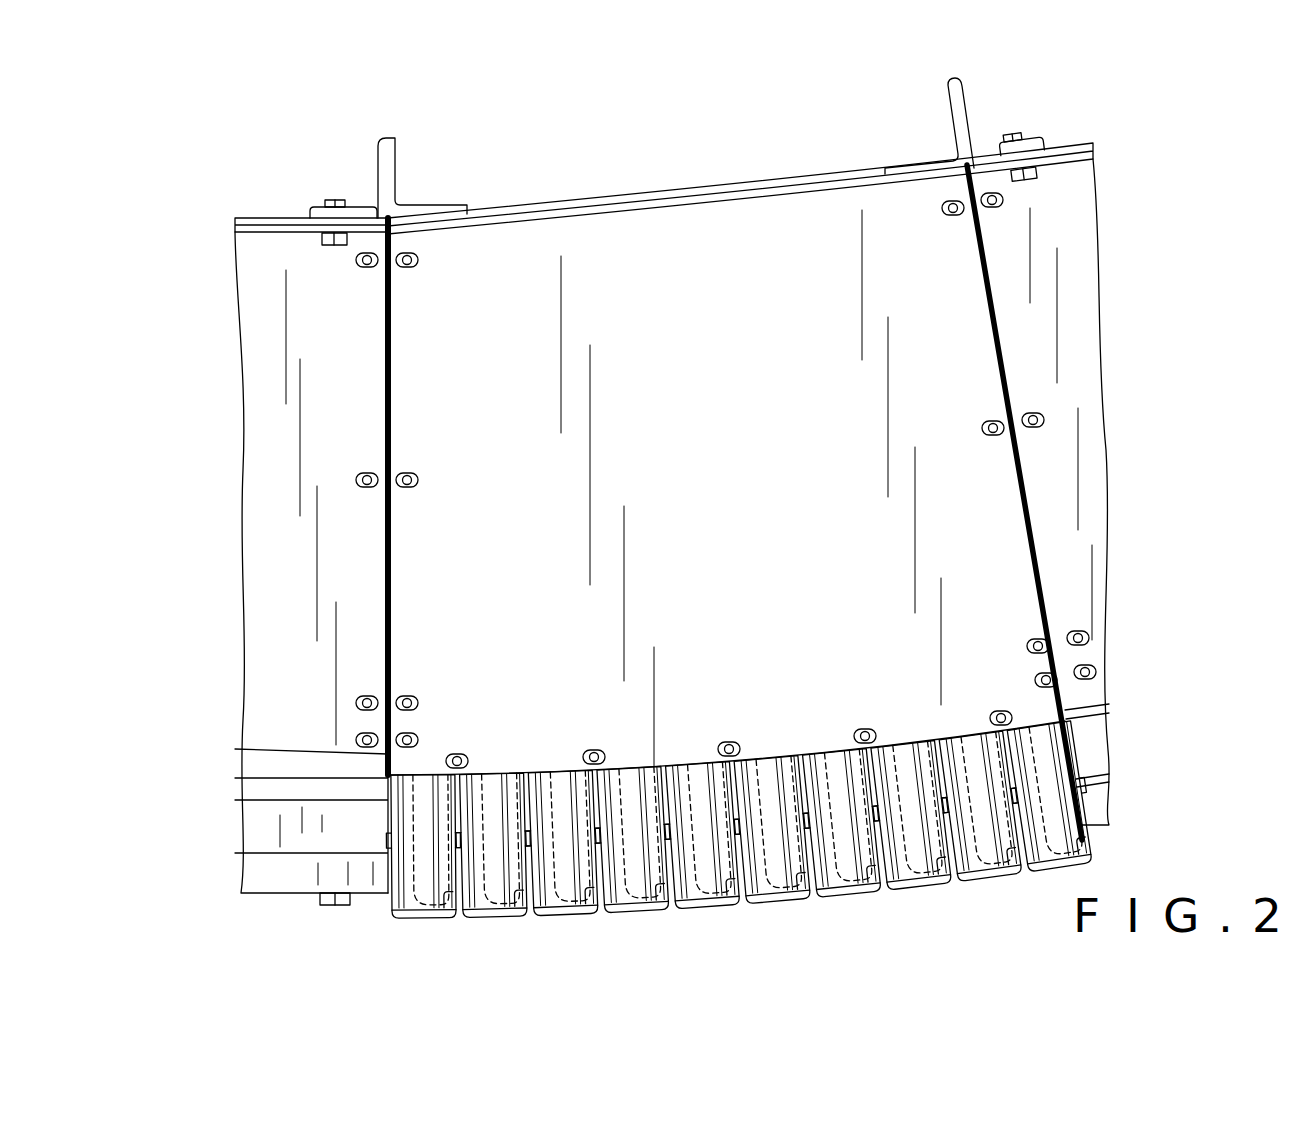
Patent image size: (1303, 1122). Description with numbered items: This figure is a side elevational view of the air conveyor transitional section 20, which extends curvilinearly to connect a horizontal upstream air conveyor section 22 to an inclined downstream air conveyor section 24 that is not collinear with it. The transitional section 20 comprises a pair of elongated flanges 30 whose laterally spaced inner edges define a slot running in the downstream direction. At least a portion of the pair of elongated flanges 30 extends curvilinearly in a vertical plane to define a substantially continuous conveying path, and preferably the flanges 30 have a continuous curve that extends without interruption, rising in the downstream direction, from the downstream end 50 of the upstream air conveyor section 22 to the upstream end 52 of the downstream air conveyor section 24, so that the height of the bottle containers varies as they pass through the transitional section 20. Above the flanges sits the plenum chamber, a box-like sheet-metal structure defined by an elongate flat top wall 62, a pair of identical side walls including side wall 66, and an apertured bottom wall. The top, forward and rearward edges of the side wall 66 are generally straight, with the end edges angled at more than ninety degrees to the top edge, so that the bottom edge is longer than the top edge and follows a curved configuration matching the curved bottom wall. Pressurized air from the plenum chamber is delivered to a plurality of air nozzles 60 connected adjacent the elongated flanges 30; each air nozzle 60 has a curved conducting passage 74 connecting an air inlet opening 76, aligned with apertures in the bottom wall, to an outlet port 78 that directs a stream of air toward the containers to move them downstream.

The air conveyor transitional section 20 is at (664, 176).
The upstream air conveyor section 22 is at (289, 526).
The downstream air conveyor section 24 is at (1068, 123).
The pair of elongated flanges 30 is at (738, 887).
The downstream end of the upstream air conveyor section 50 is at (392, 315).
The upstream end of the downstream air conveyor section 52 is at (975, 257).
The air nozzles 60 is at (720, 841).
The top wall 62 is at (695, 188).
The side wall 66 is at (537, 273).
The curved conducting passage 74 is at (435, 847).
The air inlet opening 76 is at (423, 773).
The outlet port 78 is at (468, 916).